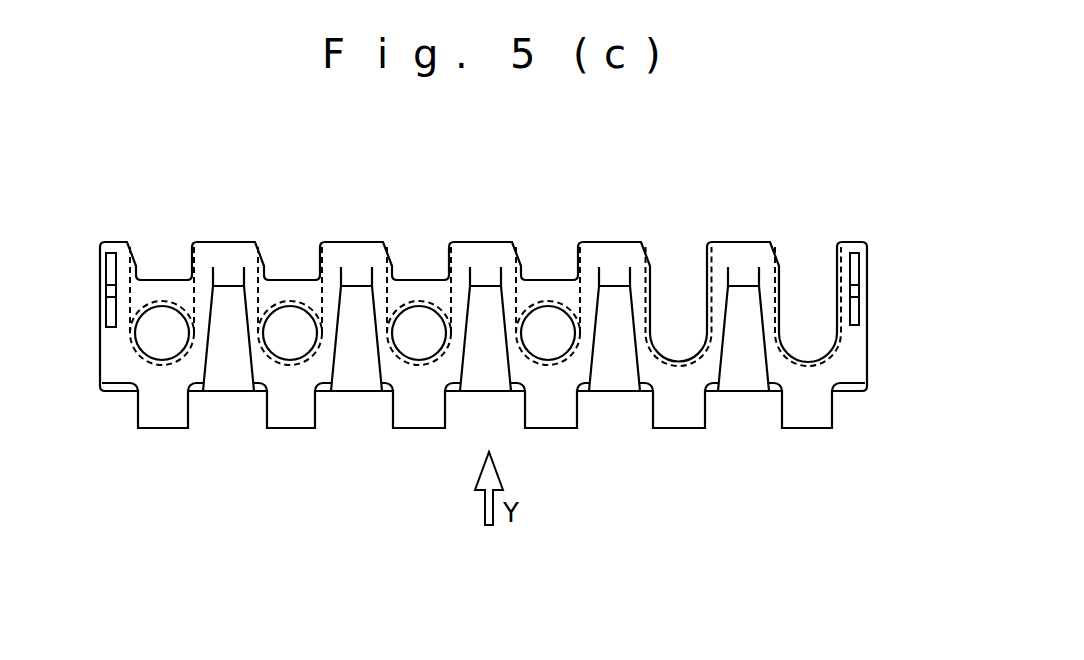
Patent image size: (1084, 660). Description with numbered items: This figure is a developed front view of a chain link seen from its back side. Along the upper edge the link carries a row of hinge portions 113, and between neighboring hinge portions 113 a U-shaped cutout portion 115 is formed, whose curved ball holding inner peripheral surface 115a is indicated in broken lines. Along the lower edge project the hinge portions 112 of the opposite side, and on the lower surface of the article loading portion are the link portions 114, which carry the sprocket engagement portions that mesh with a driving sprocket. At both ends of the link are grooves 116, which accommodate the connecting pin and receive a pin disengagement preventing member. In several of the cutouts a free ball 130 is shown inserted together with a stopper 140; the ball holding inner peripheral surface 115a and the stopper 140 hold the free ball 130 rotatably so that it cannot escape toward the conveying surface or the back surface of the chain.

The hinge portion 112 is at (167, 413).
The hinge portion 113 is at (233, 252).
The link portion 114 is at (642, 320).
The U-shaped cutout portion 115 is at (832, 297).
The ball holding inner peripheral surface 115a is at (775, 305).
The groove 116 is at (855, 267).
The free ball 130 is at (153, 343).
The stopper 140 is at (162, 293).